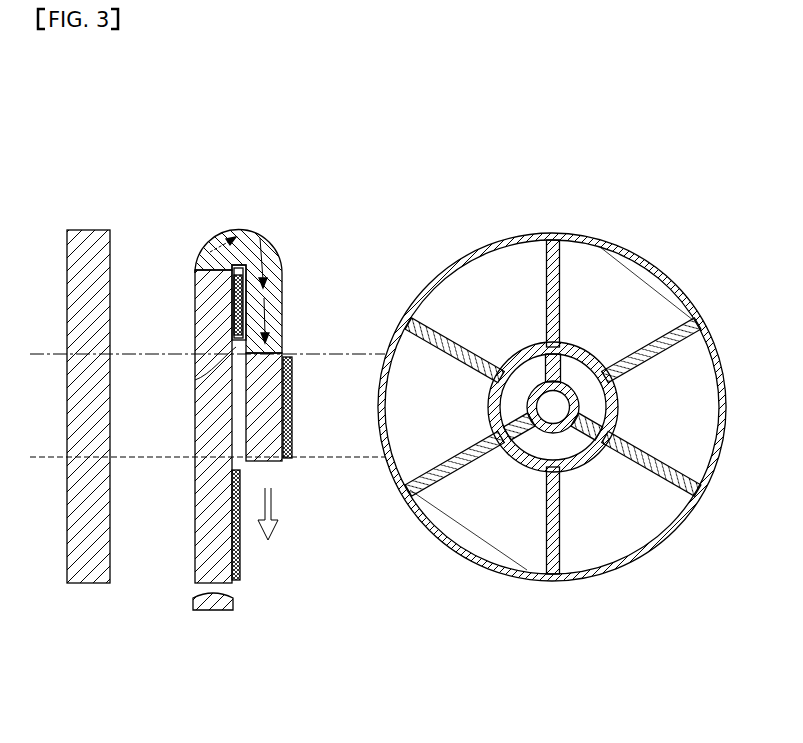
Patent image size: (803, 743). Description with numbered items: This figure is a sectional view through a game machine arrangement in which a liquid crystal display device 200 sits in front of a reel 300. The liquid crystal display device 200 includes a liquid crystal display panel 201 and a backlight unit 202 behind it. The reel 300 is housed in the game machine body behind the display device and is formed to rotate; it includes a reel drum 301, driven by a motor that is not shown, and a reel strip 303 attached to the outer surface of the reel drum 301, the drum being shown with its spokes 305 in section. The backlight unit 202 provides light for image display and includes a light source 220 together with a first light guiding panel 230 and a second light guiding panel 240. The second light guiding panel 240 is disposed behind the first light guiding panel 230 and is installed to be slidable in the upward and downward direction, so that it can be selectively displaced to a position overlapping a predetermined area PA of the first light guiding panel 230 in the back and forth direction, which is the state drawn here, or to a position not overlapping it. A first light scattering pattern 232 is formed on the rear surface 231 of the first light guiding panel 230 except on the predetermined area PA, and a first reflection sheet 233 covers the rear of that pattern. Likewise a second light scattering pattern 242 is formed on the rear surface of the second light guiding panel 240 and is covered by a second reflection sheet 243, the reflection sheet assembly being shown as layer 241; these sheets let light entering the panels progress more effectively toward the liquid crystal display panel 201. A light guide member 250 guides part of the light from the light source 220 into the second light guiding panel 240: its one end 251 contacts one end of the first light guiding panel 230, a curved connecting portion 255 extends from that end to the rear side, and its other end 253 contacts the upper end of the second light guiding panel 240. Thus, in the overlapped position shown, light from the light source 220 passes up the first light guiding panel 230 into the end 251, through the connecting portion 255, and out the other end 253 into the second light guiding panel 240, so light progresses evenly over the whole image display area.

The liquid crystal display device 200 is at (170, 150).
The liquid crystal display panel 201 is at (83, 585).
The backlight unit 202 is at (246, 628).
The light source 220 is at (212, 612).
The first light guiding panel 230 is at (193, 565).
The rear surface 231 is at (195, 380).
The first light scattering pattern 232 is at (232, 303).
The first reflection sheet 233 is at (232, 275).
The second light guiding panel 240 is at (270, 462).
The slider magnet 241 is at (285, 352).
The second light scattering pattern 242 is at (293, 447).
The second reflection sheet 243 is at (293, 412).
The light guide member 250 is at (270, 265).
The one end of the light guiding member 251 is at (199, 270).
The other end of the light guiding member 253 is at (280, 317).
The connecting portion 255 is at (243, 230).
The reel 300 is at (543, 411).
The reel drum 301 is at (527, 465).
The reel strip 303 is at (460, 553).
The spoke 305 is at (383, 413).
The predetermined area PA is at (195, 407).